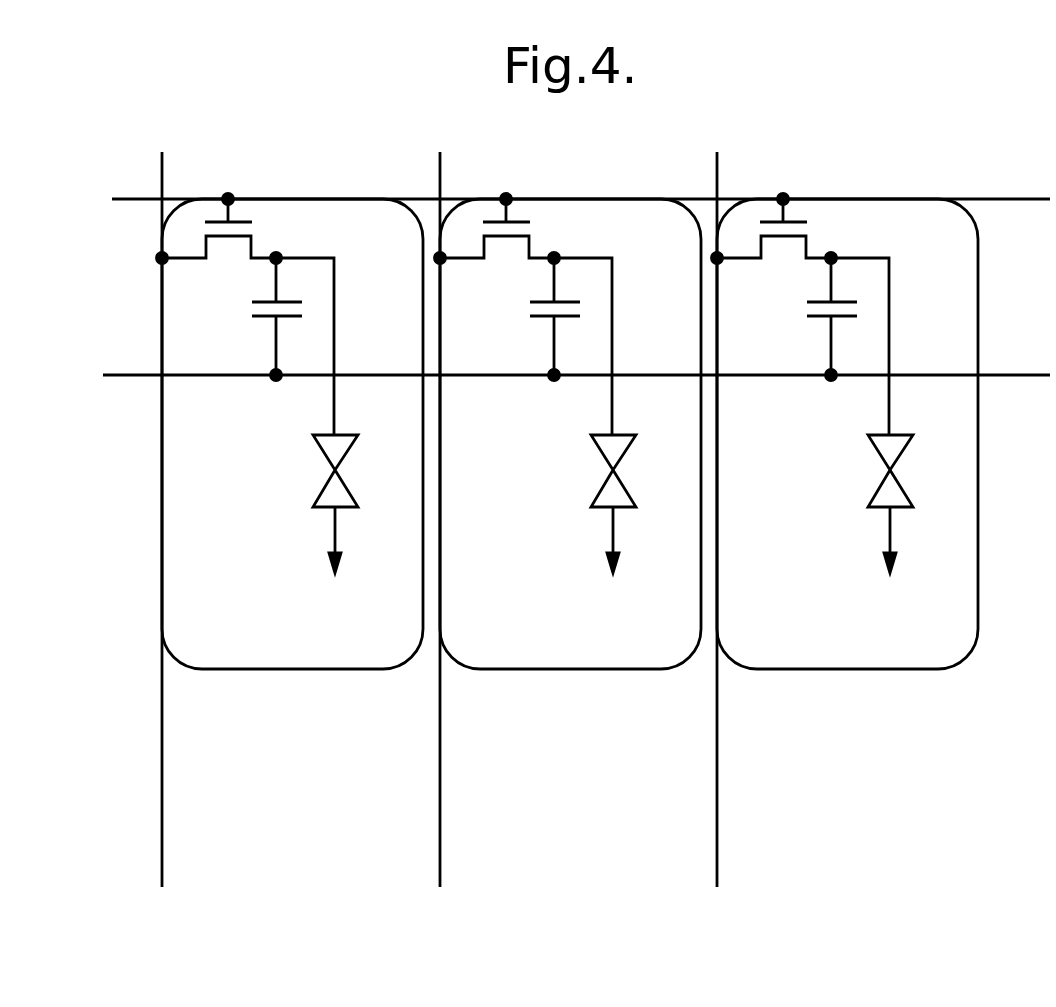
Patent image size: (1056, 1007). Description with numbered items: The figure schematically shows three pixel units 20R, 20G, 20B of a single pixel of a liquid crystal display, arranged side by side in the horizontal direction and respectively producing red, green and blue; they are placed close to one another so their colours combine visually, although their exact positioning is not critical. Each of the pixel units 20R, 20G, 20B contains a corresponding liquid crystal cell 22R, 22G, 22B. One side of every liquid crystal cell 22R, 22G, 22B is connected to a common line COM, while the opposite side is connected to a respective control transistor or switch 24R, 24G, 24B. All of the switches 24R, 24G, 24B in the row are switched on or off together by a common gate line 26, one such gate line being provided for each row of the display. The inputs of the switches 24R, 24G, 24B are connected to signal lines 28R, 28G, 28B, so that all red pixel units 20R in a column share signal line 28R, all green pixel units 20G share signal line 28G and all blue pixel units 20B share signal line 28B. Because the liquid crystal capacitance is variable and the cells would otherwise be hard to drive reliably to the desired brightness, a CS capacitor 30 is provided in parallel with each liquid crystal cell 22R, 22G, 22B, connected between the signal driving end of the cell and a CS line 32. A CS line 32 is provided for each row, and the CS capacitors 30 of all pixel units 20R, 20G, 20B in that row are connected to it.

The red pixel unit 20R is at (290, 460).
The green pixel unit 20G is at (568, 460).
The blue pixel unit 20B is at (845, 460).
The liquid crystal cell 22R is at (324, 478).
The liquid crystal cell 22G is at (602, 478).
The liquid crystal cell 22B is at (879, 478).
The control transistor or switch 24R is at (247, 222).
The control transistor or switch 24G is at (525, 222).
The control transistor or switch 24B is at (802, 222).
The gate line 26 is at (551, 215).
The signal line 28R is at (160, 537).
The signal line 28G is at (439, 537).
The signal line 28B is at (715, 537).
The CS capacitor 30 is at (268, 318).
The CS line 32 is at (558, 395).